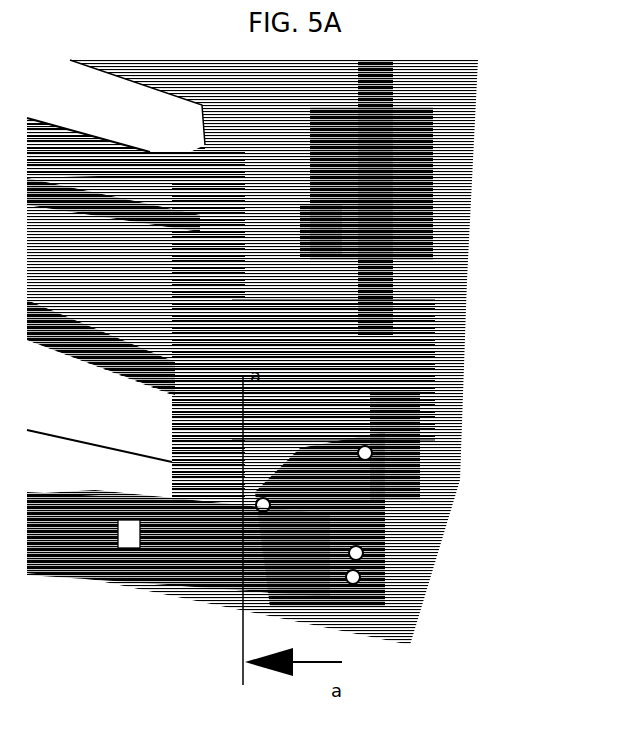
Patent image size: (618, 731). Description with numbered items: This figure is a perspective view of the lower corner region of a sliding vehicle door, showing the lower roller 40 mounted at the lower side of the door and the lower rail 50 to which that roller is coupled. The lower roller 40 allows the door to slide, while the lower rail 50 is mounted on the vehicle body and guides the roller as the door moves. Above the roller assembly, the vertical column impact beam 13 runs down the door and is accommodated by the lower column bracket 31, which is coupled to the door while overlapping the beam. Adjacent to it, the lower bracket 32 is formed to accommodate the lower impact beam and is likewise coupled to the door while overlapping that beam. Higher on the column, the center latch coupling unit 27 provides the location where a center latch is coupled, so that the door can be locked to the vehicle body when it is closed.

The column impact beam 13 is at (372, 300).
The center latch coupling unit 27 is at (407, 155).
The lower column bracket 31 is at (330, 380).
The lower bracket 32 is at (383, 433).
The lower roller 40 is at (350, 512).
The lower rail 50 is at (55, 552).